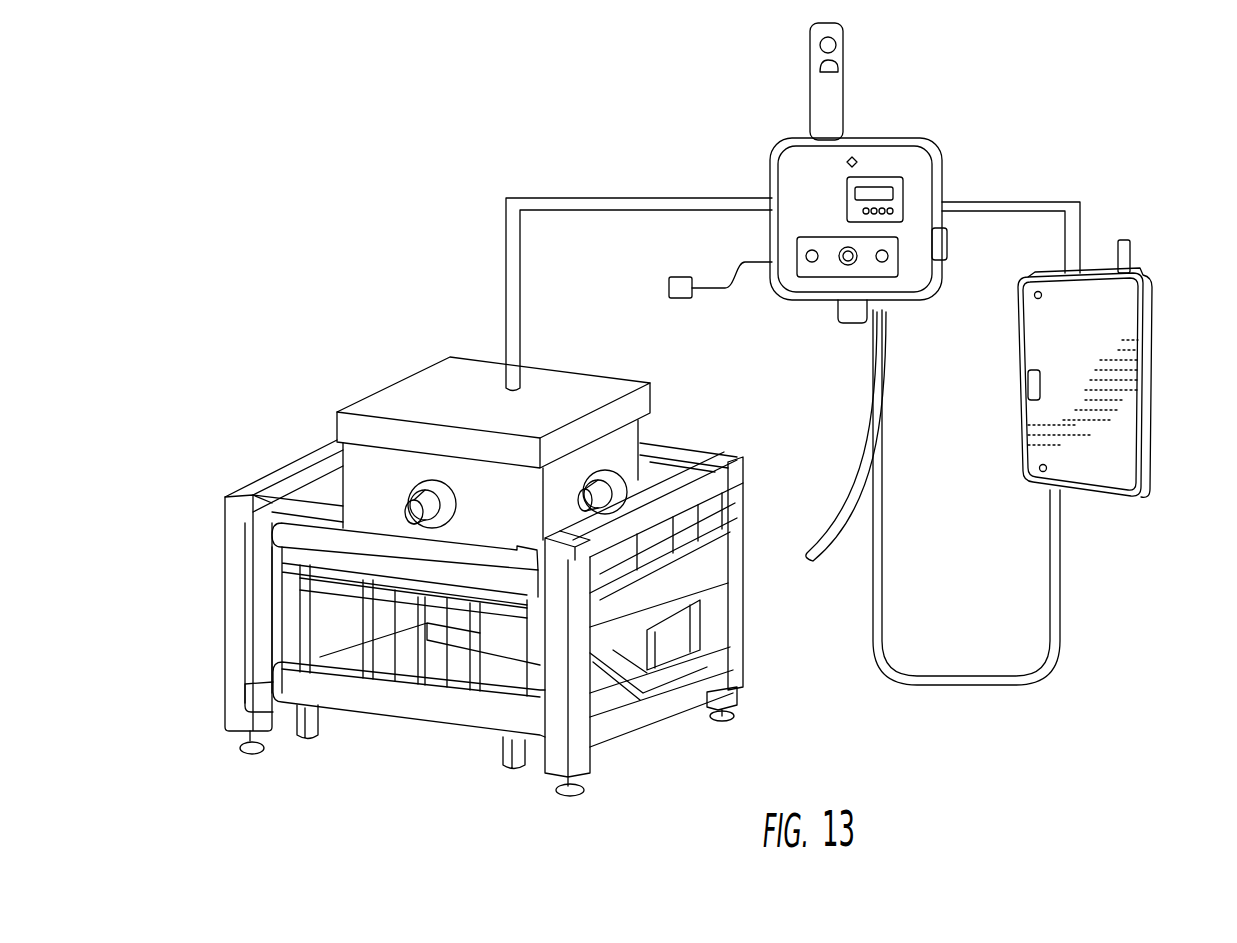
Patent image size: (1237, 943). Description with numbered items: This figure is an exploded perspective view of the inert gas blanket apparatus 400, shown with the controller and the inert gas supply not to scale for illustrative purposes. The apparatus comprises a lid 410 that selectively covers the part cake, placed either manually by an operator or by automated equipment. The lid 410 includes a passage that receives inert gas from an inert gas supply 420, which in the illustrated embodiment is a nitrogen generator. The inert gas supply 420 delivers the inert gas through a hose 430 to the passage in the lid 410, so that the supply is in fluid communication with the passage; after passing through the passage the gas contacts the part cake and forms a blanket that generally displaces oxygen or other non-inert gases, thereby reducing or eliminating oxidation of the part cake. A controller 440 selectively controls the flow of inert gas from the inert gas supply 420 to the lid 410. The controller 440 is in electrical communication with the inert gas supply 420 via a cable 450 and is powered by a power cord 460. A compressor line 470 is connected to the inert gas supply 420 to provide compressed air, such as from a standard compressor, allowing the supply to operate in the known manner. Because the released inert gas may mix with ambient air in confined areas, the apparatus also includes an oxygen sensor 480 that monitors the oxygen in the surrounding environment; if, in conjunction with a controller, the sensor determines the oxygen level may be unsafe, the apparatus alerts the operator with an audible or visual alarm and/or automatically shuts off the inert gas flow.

The inert gas blanket apparatus 400 is at (247, 365).
The lid 410 is at (420, 377).
The inert gas supply 420 is at (1157, 330).
The hose 430 is at (506, 278).
The controller 440 is at (942, 182).
The cable 450 is at (880, 612).
The power cord 460 is at (833, 532).
The compressor line 470 is at (1130, 252).
The oxygen sensor 480 is at (678, 277).